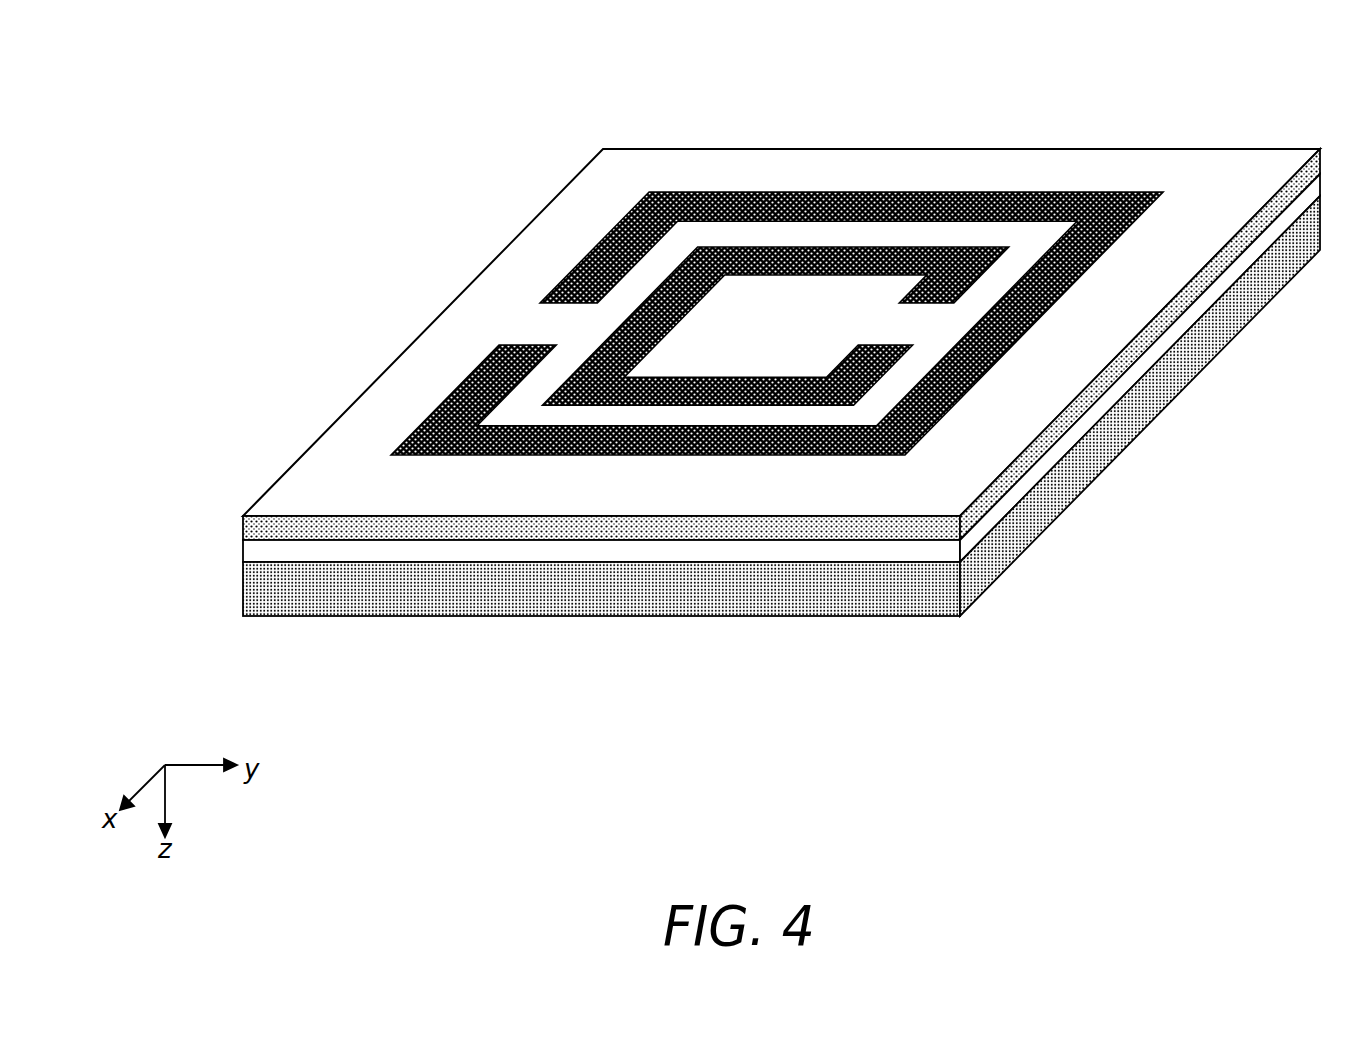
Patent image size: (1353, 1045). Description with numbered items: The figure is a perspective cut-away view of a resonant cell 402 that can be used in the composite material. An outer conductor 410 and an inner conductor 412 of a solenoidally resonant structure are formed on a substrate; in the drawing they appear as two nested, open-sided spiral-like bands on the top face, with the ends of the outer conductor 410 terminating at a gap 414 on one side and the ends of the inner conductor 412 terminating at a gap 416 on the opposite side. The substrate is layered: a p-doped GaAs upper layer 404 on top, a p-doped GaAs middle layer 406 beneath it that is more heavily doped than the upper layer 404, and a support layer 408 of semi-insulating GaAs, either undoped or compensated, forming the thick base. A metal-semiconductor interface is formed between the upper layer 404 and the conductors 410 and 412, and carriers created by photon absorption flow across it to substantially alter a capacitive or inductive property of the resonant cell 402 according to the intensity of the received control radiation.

The resonant cell 402 is at (228, 112).
The upper layer 404 is at (242, 525).
The middle layer 406 is at (242, 550).
The support layer 408 is at (242, 593).
The outer conductor 410 is at (768, 193).
The inner conductor 412 is at (705, 377).
The outer coil gap 414 is at (495, 337).
The inner coil gap 416 is at (890, 303).